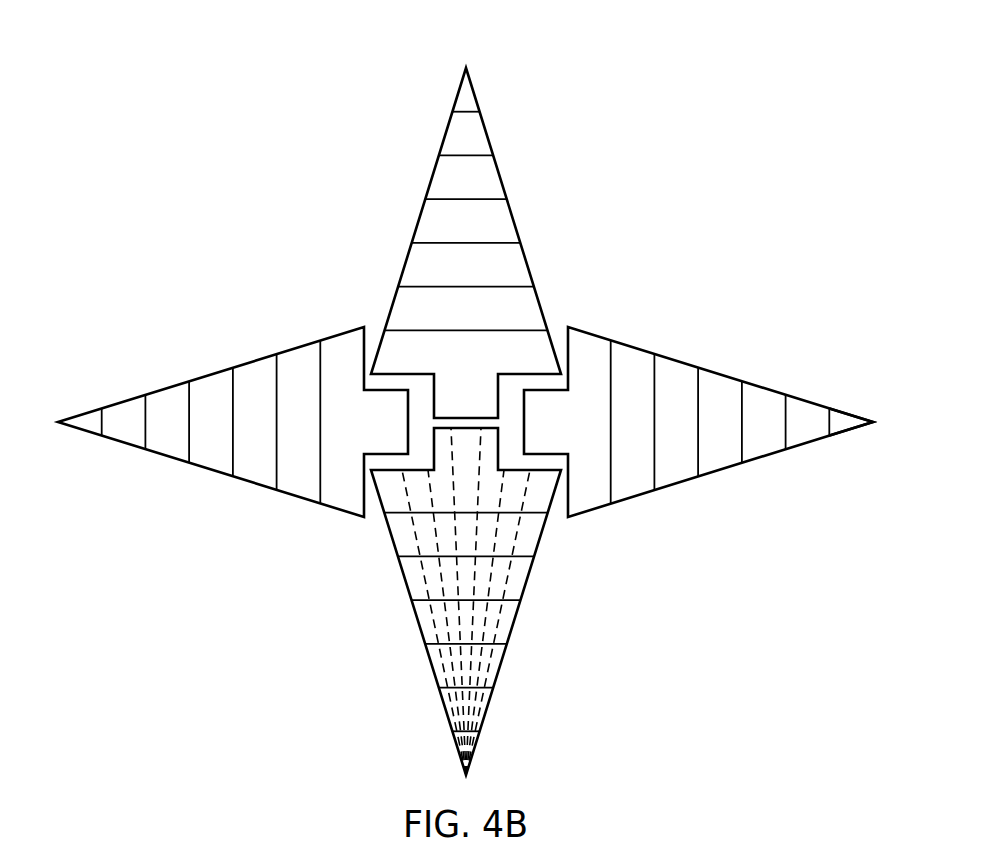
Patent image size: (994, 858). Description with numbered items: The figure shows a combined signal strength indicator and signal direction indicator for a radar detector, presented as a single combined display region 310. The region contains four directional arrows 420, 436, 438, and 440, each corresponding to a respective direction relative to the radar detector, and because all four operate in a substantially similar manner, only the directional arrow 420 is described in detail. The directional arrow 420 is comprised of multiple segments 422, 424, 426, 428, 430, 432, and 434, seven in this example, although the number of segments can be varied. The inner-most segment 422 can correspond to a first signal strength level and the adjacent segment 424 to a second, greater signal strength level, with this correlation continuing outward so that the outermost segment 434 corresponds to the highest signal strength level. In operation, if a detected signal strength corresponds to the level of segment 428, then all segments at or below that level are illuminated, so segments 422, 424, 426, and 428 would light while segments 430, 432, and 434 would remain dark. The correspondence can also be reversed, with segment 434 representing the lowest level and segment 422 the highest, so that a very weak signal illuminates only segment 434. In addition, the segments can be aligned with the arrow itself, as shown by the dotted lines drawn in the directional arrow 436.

The combined display region 310 is at (646, 54).
The directional arrow 420 is at (632, 498).
The inner-most segment 422 is at (583, 334).
The adjacent segment 424 is at (632, 354).
The segment 426 is at (670, 367).
The segment 428 is at (717, 380).
The segment 430 is at (763, 451).
The segment 432 is at (803, 407).
The outermost segment 434 is at (847, 424).
The directional arrow 436 is at (457, 743).
The directional arrow 438 is at (123, 398).
The directional arrow 440 is at (475, 93).